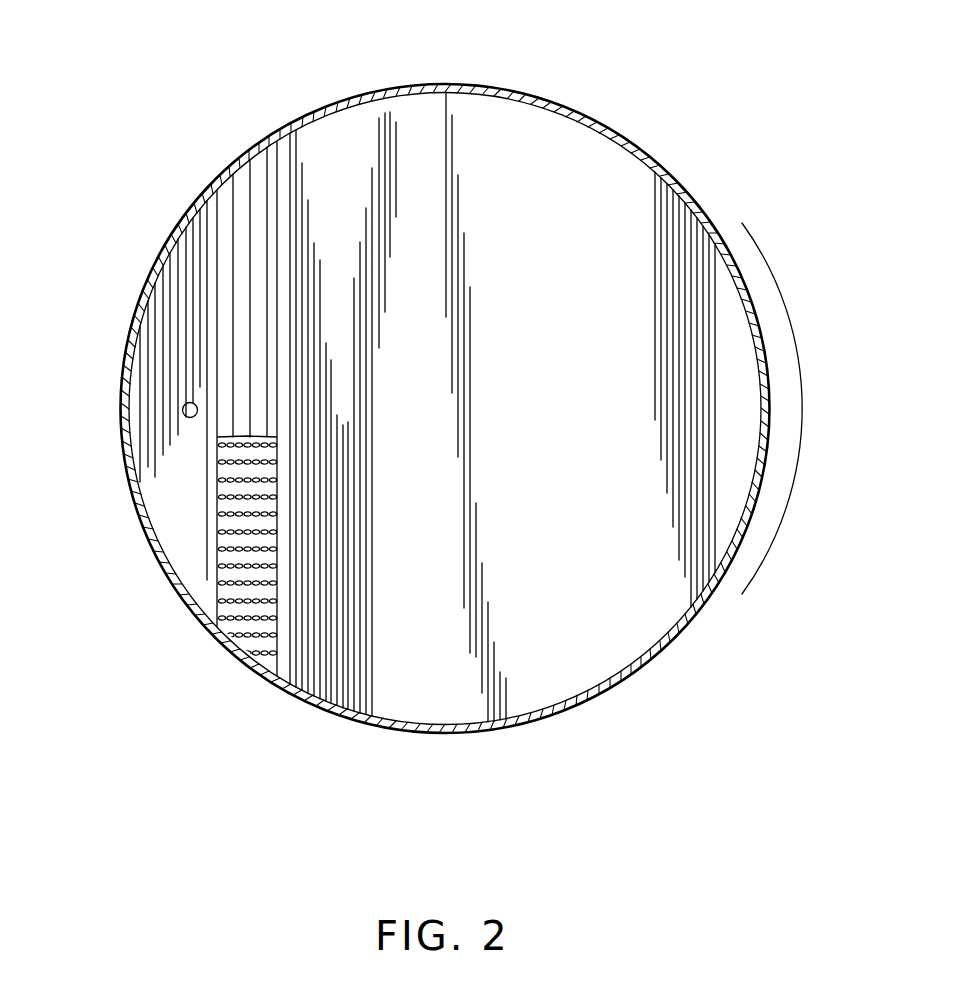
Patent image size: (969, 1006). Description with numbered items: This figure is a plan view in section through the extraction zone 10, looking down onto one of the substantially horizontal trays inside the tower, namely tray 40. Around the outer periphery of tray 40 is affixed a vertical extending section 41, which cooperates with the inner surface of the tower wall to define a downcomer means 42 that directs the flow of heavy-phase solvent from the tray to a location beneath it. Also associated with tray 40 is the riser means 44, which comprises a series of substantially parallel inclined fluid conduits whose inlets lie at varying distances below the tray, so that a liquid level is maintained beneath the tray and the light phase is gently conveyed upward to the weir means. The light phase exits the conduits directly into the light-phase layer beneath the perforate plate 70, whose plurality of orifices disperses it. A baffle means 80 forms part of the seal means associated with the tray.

The extraction zone 10 is at (608, 126).
The tray 40 is at (496, 121).
The vertical extending section 41 is at (716, 523).
The downcomer means 42 is at (738, 368).
The riser means 44 is at (310, 137).
The perforate plate 70 is at (238, 575).
The baffle means 80 is at (150, 357).